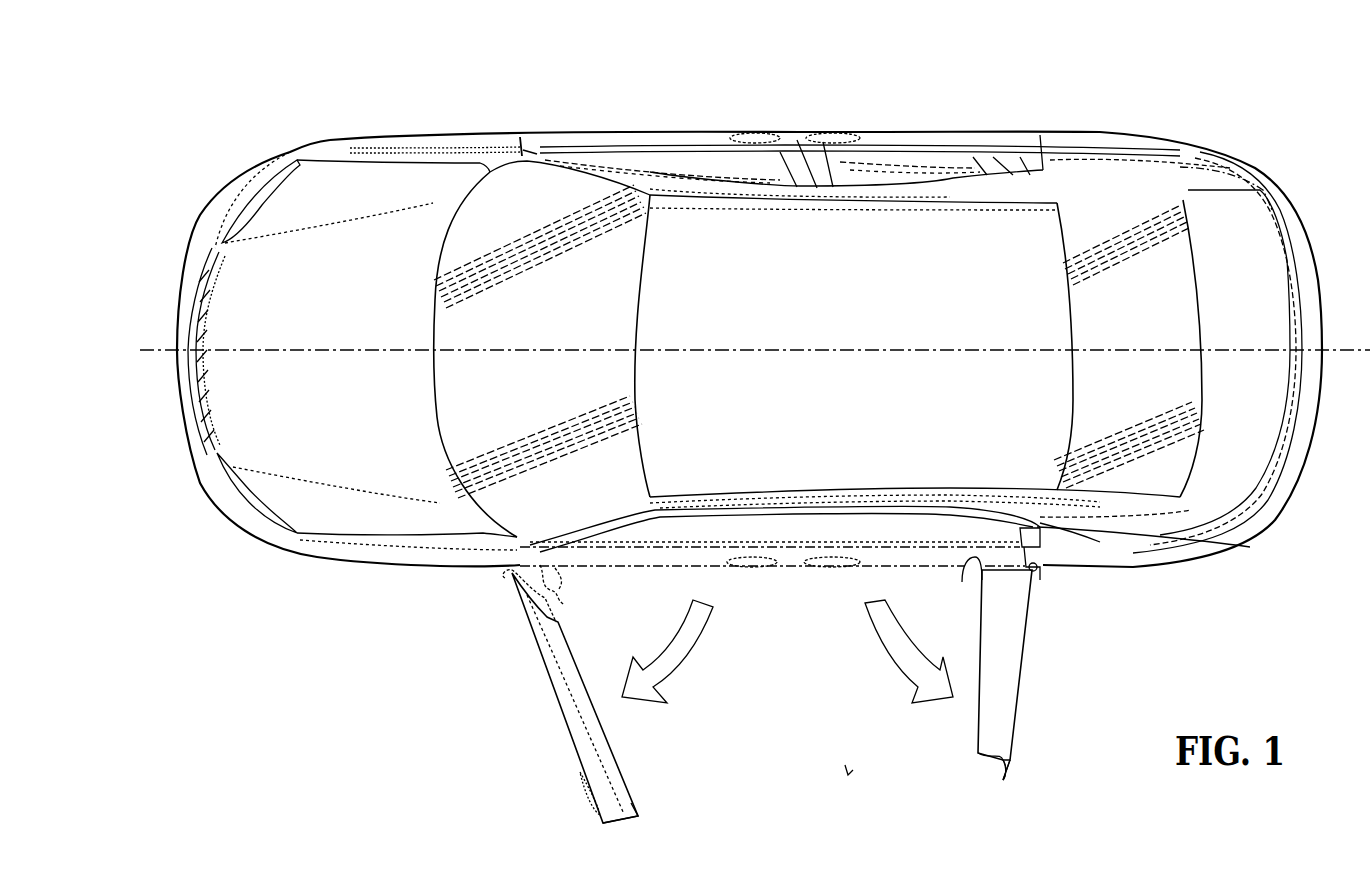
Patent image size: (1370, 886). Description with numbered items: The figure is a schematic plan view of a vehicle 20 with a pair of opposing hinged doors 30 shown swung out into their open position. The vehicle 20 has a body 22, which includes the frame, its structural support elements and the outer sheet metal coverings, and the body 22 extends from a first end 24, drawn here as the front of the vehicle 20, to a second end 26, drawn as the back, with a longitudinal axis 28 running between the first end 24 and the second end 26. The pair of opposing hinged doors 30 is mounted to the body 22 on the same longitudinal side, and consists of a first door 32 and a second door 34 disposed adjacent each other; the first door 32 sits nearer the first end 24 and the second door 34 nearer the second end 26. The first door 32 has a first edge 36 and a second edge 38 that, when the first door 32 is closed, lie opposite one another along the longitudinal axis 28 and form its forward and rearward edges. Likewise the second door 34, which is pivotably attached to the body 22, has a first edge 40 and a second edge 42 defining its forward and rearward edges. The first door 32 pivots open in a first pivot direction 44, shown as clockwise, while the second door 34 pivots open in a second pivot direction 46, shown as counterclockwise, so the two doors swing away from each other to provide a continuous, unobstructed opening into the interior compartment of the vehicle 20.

The vehicle 20 is at (1108, 85).
The body 22 is at (1170, 138).
The first end 24 is at (180, 312).
The second end 26 is at (1312, 250).
The longitudinal axis 28 is at (282, 350).
The pair of opposing hinged doors 30 is at (845, 765).
The first door 32 is at (560, 722).
The second door 34 is at (1027, 635).
The first edge 36 is at (505, 578).
The second edge 38 is at (630, 823).
The first edge 40 is at (1000, 770).
The second edge 42 is at (968, 565).
The first pivot direction 44 is at (698, 648).
The second pivot direction 46 is at (873, 640).